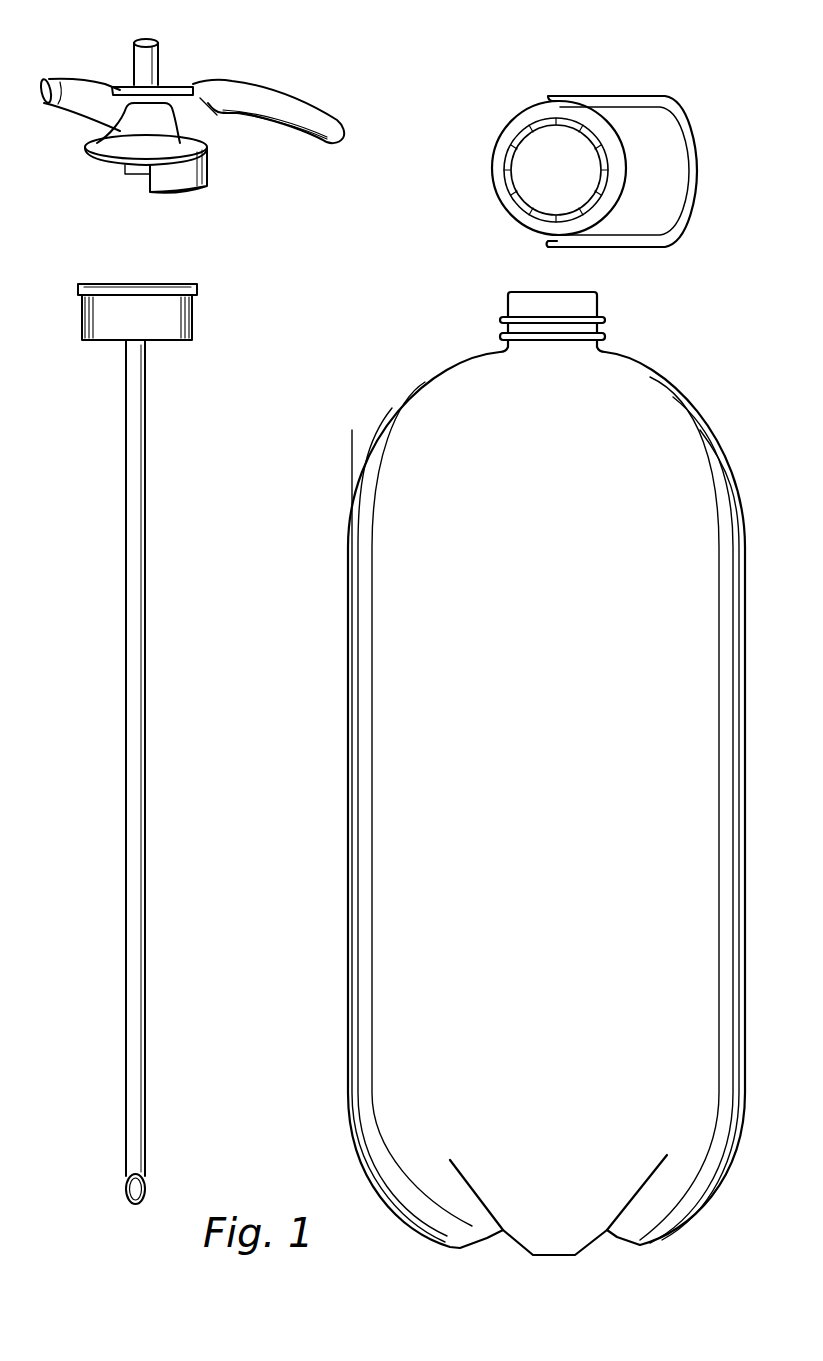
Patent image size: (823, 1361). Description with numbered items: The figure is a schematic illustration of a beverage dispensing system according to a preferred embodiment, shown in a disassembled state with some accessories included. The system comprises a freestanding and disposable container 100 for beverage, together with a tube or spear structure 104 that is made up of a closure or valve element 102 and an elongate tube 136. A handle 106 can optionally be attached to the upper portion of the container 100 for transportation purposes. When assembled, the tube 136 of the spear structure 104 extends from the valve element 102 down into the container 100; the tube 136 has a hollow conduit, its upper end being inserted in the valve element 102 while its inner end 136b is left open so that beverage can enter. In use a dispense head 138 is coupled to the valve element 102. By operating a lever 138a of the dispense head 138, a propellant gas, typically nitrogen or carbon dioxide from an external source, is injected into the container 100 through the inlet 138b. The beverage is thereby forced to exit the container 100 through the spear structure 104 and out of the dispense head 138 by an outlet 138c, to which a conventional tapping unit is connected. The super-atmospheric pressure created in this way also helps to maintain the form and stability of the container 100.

The container 100 is at (675, 389).
The valve element 102 is at (189, 284).
The spear structure 104 is at (152, 735).
The handle 106 is at (608, 92).
The tube 136 is at (187, 772).
The inner end 136b is at (146, 1190).
The dispense head 138 is at (209, 97).
The lever 138a is at (300, 100).
The inlet 138b is at (67, 84).
The outlet 138c is at (147, 43).